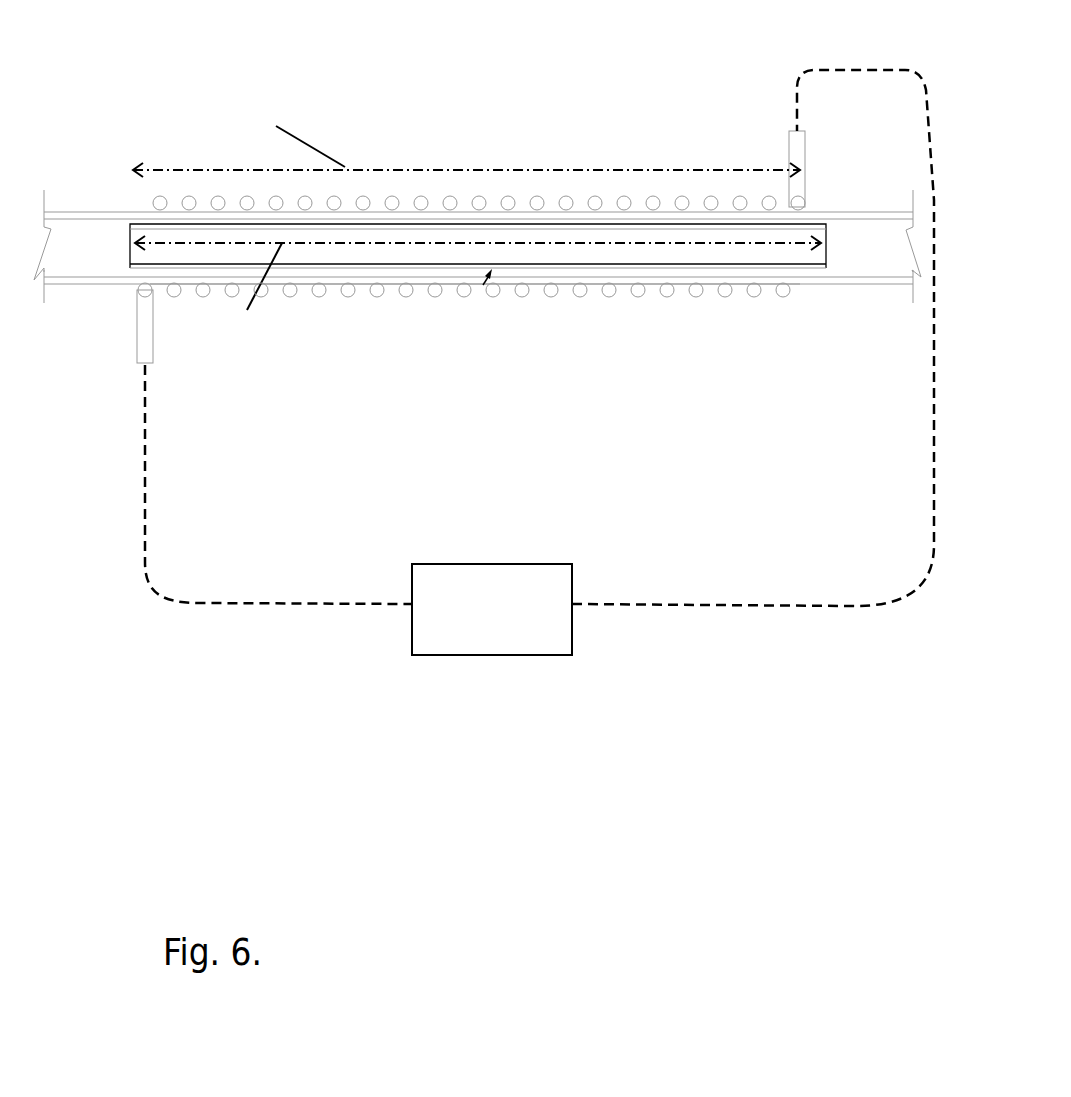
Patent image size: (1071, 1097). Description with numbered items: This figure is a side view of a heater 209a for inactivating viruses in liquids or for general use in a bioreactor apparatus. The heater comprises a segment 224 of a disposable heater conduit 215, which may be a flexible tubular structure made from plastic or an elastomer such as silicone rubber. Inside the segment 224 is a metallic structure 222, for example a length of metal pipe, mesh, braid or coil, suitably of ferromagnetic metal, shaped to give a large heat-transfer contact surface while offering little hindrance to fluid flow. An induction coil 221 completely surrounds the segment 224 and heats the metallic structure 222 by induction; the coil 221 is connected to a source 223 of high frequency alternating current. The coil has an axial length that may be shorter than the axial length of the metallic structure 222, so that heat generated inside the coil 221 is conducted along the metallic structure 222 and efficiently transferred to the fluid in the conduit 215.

The heater 209a is at (480, 115).
The induction coil 221 is at (594, 198).
The metallic structure 222 is at (648, 267).
The segment of disposable heater conduit 224 is at (423, 282).
The disposable heater conduit 215 is at (849, 283).
The source of high frequency alternating current 223 is at (476, 656).